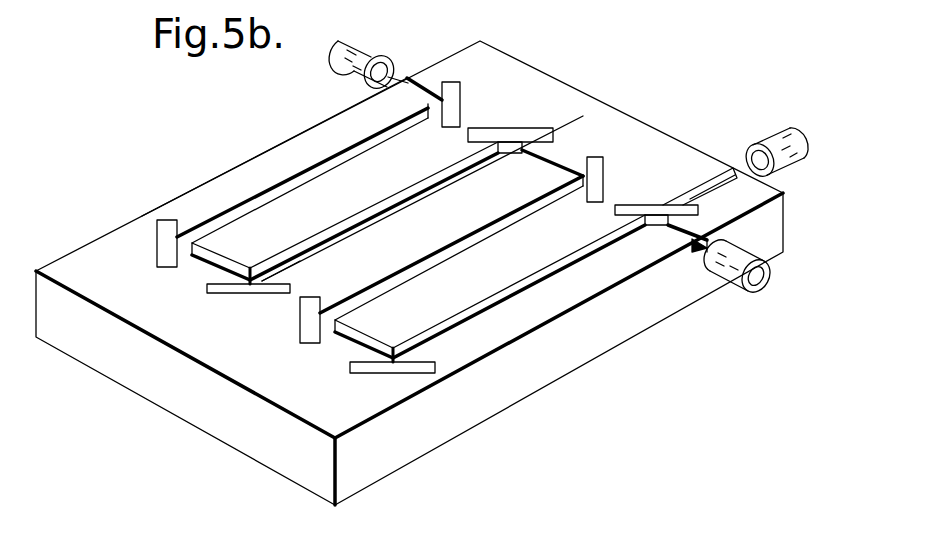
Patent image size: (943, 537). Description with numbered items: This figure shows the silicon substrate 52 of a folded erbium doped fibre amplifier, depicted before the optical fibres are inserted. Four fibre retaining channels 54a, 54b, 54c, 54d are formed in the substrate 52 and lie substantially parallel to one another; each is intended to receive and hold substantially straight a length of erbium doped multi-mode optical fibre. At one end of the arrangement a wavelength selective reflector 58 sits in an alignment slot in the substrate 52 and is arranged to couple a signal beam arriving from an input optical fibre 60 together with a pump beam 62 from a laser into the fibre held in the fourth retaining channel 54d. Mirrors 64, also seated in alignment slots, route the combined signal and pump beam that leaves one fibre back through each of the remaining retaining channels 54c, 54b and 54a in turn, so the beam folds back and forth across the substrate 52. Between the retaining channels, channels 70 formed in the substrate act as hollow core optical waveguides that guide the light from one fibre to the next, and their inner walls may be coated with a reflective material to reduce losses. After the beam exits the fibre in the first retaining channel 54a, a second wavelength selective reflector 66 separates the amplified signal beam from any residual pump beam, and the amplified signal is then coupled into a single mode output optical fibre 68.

The substrate 52 is at (360, 470).
The fibre retaining channel 54a is at (297, 180).
The fibre retaining channel 54b is at (334, 237).
The fibre retaining channel 54c is at (428, 267).
The fibre retaining channel 54d is at (502, 302).
The wavelength selective reflector 58 is at (641, 212).
The input optical fibre 60 is at (780, 140).
The pump beam 62 is at (732, 281).
The mirrors 64 is at (160, 242).
The second wavelength selective reflector 66 is at (453, 107).
The single mode output optical fibre 68 is at (364, 54).
The channels 70 is at (225, 268).